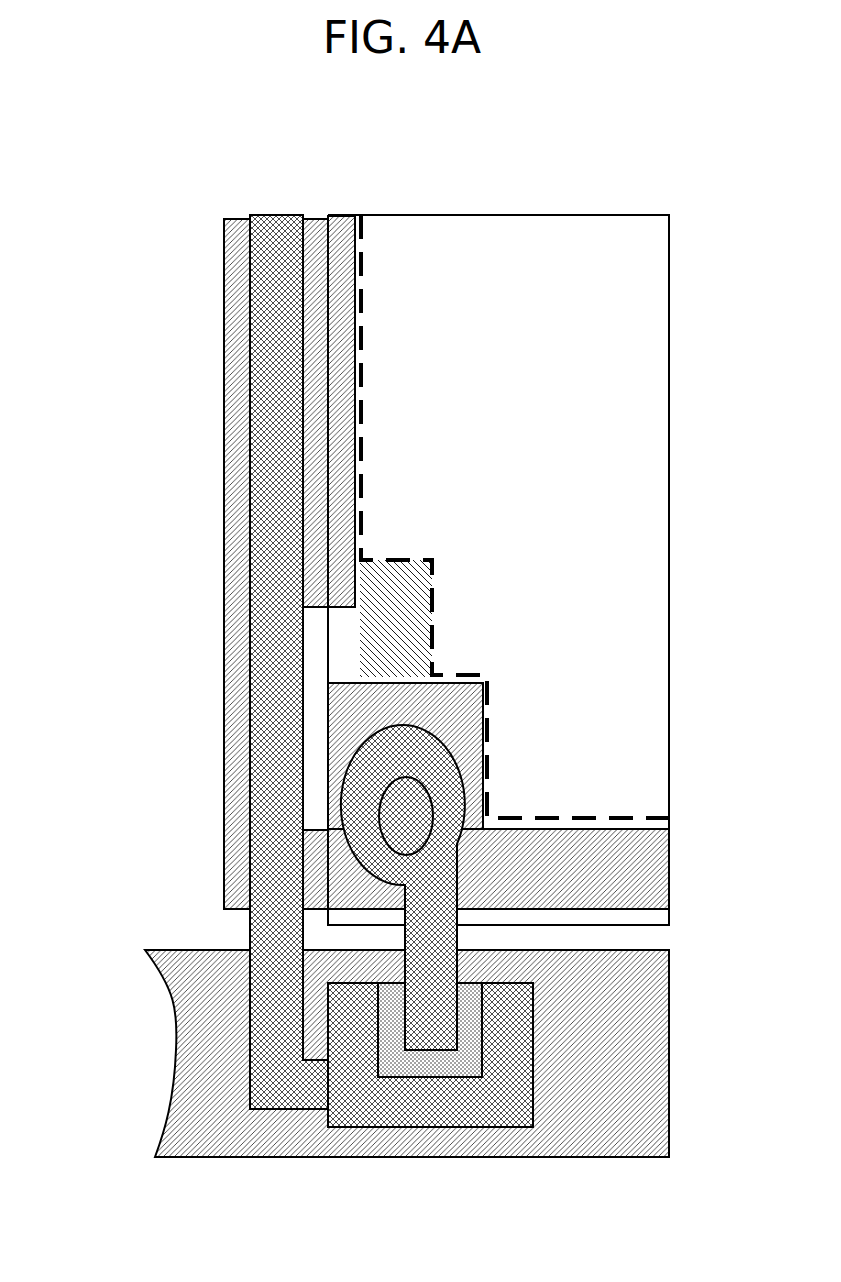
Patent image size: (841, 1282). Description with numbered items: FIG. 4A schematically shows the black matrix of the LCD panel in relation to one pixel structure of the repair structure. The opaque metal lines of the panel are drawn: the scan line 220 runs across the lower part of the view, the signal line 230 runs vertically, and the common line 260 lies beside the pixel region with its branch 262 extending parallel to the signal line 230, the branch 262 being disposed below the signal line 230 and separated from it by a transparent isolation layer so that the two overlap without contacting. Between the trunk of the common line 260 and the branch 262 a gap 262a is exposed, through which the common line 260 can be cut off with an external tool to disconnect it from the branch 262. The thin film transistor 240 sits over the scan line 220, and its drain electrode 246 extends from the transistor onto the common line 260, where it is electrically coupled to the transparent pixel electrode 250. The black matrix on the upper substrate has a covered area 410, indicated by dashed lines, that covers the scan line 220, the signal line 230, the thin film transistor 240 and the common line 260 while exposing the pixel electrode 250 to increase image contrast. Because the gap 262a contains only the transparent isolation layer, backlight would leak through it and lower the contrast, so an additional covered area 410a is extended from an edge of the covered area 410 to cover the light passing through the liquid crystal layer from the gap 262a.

The scan line 220 is at (172, 1088).
The signal line 230 is at (265, 217).
The thin film transistor 240 is at (552, 1065).
The drain electrode 246 is at (433, 872).
The pixel electrode 250 is at (548, 215).
The common line 260 is at (657, 878).
The branch 262 is at (232, 355).
The gap 262a is at (317, 743).
The covered area 410 is at (362, 493).
The additional covered area 410a is at (407, 623).